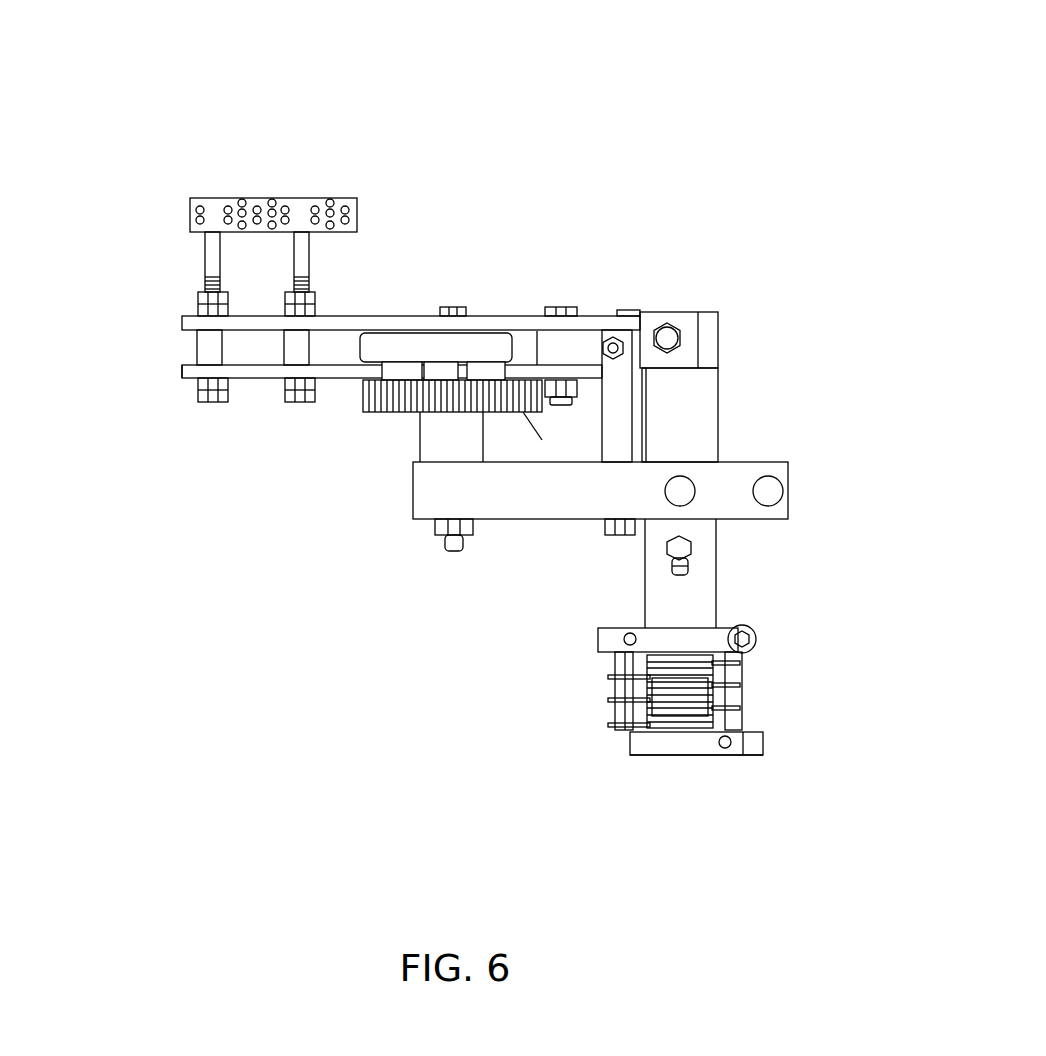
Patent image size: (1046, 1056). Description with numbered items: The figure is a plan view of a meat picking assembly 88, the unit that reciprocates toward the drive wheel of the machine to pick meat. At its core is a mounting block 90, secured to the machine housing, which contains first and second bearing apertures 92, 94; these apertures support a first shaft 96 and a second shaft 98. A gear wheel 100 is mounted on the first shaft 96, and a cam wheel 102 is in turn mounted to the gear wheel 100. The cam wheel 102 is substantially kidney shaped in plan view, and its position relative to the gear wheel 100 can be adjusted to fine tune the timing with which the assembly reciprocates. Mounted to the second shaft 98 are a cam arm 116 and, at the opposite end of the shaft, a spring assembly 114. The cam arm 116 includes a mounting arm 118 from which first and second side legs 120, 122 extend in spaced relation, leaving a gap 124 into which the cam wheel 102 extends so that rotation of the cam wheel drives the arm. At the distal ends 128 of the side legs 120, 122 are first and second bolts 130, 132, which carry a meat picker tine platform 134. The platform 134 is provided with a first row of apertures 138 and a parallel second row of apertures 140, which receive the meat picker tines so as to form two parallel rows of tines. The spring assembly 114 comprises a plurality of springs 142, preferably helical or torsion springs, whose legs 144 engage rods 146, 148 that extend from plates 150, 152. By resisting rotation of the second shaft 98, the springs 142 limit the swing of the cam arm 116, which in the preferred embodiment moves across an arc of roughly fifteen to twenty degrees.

The meat picking assembly 88 is at (296, 96).
The mounting block 90 is at (532, 498).
The first bearing aperture 92 is at (430, 523).
The second bearing aperture 94 is at (718, 523).
The first shaft 96 is at (437, 430).
The second shaft 98 is at (690, 425).
The gear wheel 100 is at (472, 392).
The cam wheel 102 is at (410, 347).
The spring assembly 114 is at (728, 770).
The cam arm 116 is at (532, 312).
The mounting arm 118 is at (706, 320).
The first side leg 120 is at (183, 322).
The second side leg 122 is at (178, 368).
The gap 124 is at (195, 348).
The distal ends 128 is at (188, 378).
The first bolt 130 is at (213, 258).
The second bolt 132 is at (312, 263).
The meat picker tine platform 134 is at (217, 207).
The first row of apertures 138 is at (349, 212).
The second row of apertures 140 is at (205, 213).
The springs 142 is at (737, 662).
The legs 144 is at (613, 676).
The rod 146 is at (622, 715).
The rod 148 is at (742, 720).
The plate 150 is at (607, 638).
The plate 152 is at (657, 745).